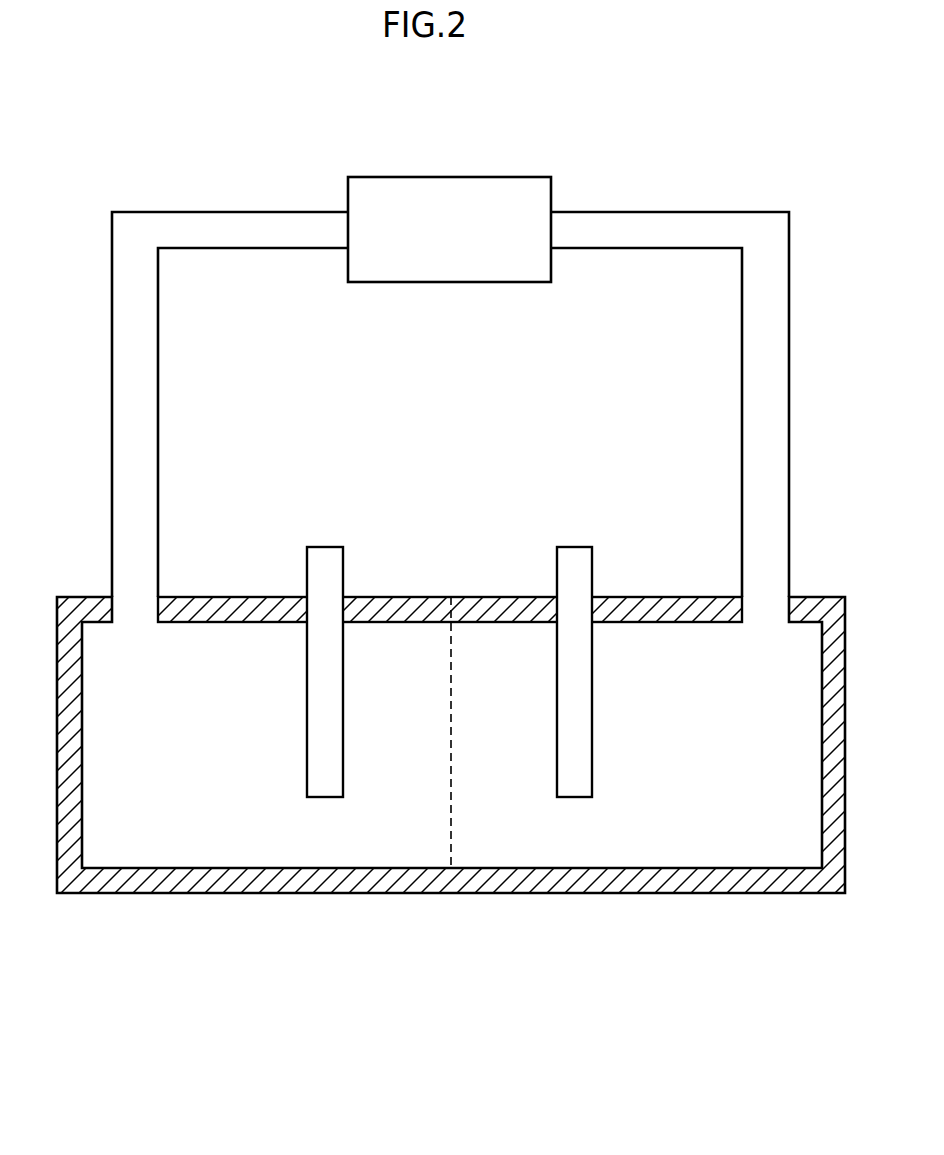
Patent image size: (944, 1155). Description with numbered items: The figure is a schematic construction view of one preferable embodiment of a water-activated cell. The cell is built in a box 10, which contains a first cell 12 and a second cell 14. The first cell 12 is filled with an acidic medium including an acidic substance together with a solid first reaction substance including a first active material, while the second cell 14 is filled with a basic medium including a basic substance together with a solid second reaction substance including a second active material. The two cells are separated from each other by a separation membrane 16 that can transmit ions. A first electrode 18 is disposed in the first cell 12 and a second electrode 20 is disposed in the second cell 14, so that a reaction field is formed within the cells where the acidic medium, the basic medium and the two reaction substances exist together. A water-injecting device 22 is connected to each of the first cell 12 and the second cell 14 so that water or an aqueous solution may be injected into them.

The box 10 is at (357, 892).
The first cell 12 is at (226, 855).
The second cell 14 is at (647, 855).
The separation membrane 16 is at (451, 822).
The first electrode 18 is at (328, 547).
The second electrode 20 is at (580, 547).
The water-injecting device 22 is at (449, 176).